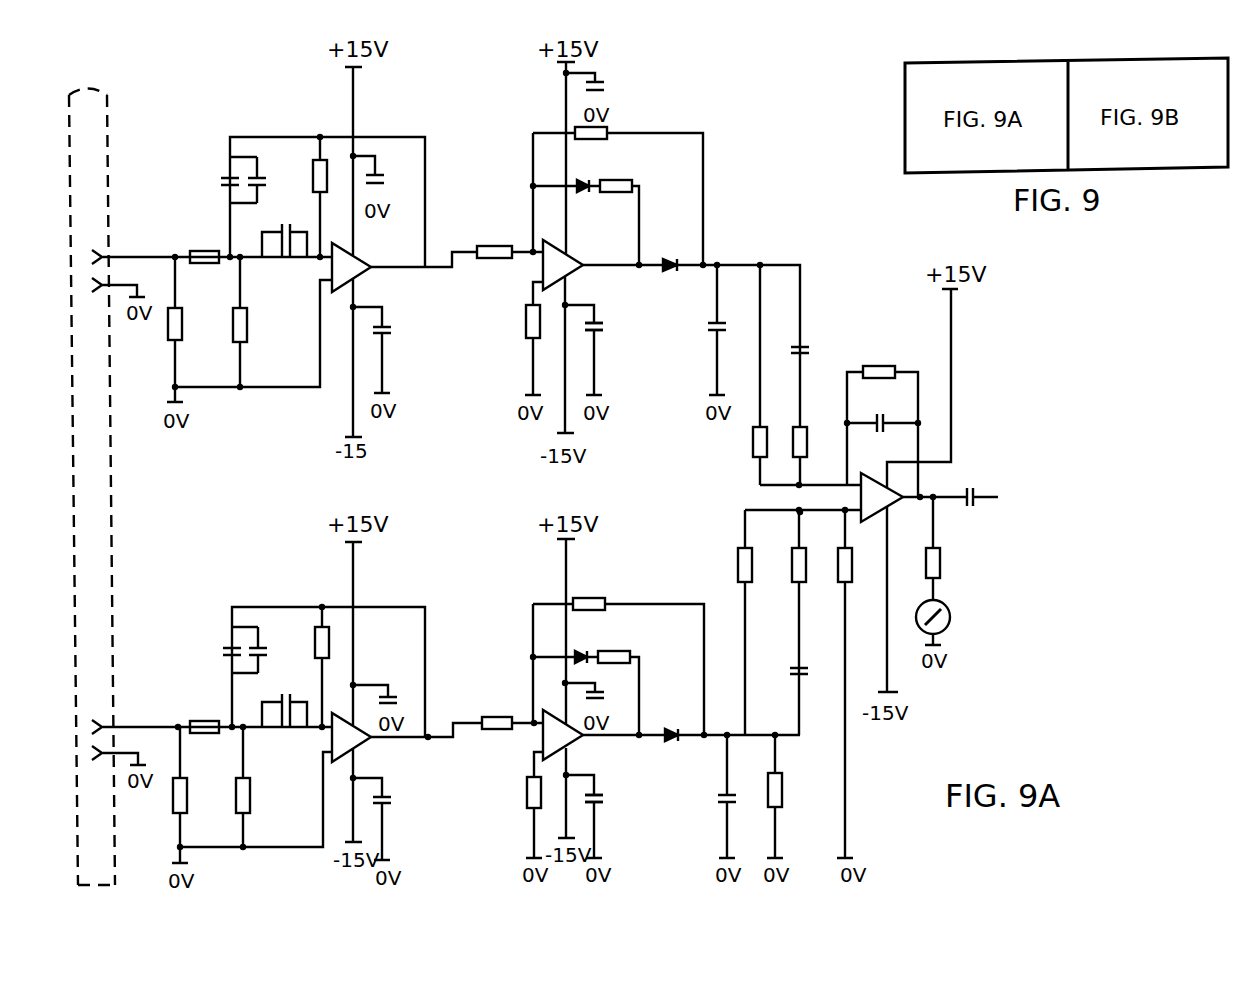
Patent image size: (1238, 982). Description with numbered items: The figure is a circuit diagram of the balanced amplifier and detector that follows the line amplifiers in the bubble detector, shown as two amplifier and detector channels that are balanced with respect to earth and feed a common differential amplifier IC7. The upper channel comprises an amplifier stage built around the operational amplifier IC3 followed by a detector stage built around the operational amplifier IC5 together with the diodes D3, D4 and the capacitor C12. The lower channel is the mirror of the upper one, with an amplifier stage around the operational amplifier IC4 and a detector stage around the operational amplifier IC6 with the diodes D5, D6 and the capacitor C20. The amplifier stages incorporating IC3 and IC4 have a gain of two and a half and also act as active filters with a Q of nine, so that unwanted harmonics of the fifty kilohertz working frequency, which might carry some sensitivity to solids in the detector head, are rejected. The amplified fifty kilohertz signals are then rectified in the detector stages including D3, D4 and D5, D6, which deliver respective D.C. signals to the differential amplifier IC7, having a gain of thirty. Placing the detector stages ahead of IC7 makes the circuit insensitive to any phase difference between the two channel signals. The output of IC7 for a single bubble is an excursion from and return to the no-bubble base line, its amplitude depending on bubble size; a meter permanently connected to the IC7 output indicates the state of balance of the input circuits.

The operational amplifier IC3 is at (362, 282).
The operational amplifier IC4 is at (362, 752).
The operational amplifier IC5 is at (575, 280).
The operational amplifier IC6 is at (575, 750).
The differential amplifier IC7 is at (892, 510).
The diode D3 is at (584, 180).
The diode D4 is at (670, 260).
The diode D5 is at (582, 652).
The diode D6 is at (671, 730).
The capacitor C12 is at (597, 335).
The capacitor C20 is at (598, 806).